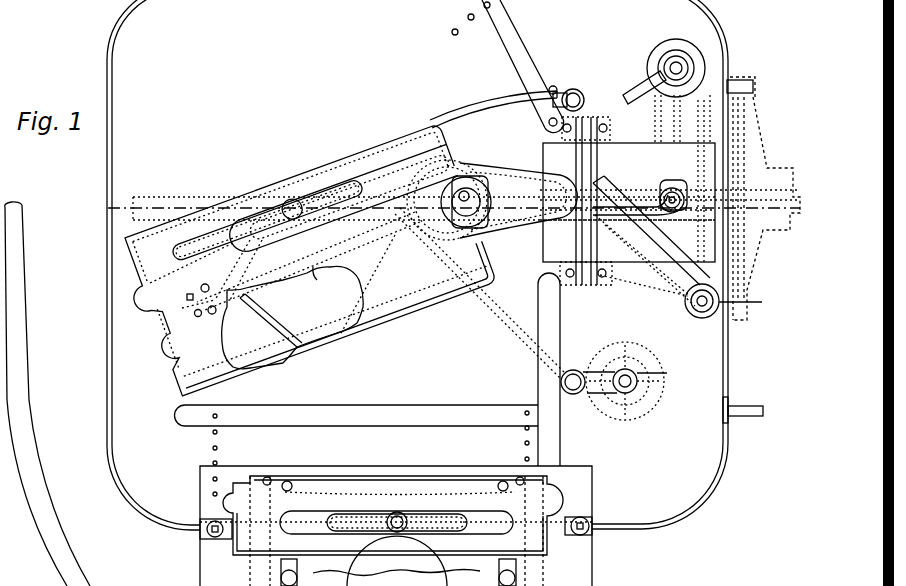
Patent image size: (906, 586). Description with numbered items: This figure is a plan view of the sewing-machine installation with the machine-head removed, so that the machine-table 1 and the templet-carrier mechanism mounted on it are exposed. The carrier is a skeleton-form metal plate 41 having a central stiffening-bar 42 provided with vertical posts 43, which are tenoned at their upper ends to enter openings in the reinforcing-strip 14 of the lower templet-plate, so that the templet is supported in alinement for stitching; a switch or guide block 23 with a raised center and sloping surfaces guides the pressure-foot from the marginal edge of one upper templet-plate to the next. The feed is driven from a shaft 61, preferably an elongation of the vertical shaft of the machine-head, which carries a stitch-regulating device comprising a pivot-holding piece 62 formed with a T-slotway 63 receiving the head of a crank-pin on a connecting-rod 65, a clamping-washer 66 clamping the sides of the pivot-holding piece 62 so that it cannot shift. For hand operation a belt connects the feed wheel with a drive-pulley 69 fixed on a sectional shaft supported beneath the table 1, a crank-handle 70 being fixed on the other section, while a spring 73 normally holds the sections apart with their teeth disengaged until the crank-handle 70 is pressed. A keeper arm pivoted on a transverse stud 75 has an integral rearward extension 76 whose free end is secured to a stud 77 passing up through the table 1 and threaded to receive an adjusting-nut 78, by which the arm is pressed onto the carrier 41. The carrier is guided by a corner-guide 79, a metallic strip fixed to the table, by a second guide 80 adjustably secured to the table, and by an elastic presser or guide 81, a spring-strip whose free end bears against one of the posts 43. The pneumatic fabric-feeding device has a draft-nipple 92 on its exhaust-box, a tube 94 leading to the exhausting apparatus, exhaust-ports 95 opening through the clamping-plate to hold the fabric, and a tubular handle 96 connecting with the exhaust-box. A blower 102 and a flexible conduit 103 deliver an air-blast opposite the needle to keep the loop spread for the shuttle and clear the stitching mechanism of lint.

The machine-table 1 is at (149, 456).
The reinforcing-strip 14 is at (520, 174).
The switch or guide block 23 is at (182, 310).
The carrier plate 41 is at (380, 323).
The central stiffening-bar 42 is at (293, 317).
The vertical posts 43 is at (245, 296).
The shaft 61 is at (672, 213).
The pivot-holding piece 62 is at (567, 92).
The T-slotway 63 is at (585, 90).
The connecting-rod 65 is at (567, 226).
The clamping-washer 66 is at (610, 312).
The drive-pulley 69 is at (640, 412).
The crank-handle 70 is at (592, 386).
The spring 73 is at (285, 290).
The transverse stud 75 is at (593, 160).
The rearward extension 76 is at (633, 233).
The stud 77 is at (754, 306).
The adjusting-nut 78 is at (635, 372).
The corner-guide 79 is at (414, 406).
The second guide 80 is at (518, 50).
The elastic presser or guide 81 is at (458, 116).
The draft-nipple 92 is at (393, 516).
The tube 94 is at (40, 508).
The exhaust-ports 95 is at (433, 513).
The handle 96 is at (355, 513).
The blower 102 is at (677, 56).
The flexible conduit 103 is at (648, 82).